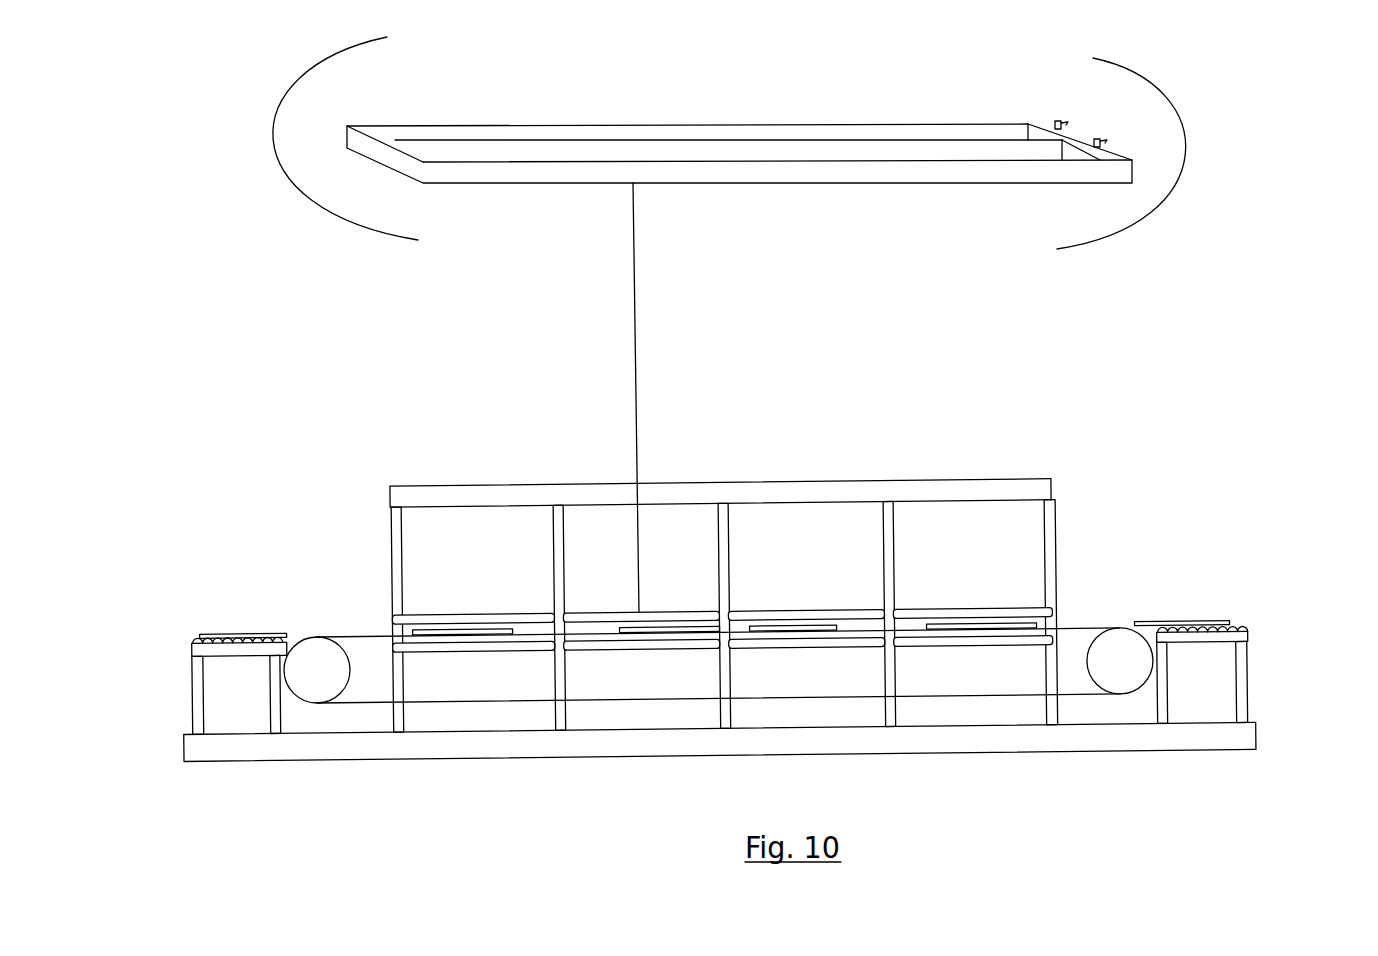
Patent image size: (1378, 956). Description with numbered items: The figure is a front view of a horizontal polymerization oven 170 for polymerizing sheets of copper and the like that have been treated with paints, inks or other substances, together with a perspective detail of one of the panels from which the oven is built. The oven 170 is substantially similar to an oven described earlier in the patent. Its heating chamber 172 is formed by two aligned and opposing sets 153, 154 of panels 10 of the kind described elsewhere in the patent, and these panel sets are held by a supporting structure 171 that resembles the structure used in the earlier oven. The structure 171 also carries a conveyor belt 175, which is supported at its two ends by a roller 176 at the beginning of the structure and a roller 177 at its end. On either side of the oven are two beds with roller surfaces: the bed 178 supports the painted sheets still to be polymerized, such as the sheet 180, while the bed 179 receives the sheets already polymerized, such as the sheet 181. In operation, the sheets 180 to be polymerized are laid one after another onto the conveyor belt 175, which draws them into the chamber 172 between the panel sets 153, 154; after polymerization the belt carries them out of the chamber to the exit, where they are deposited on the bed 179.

The panel 10 is at (857, 122).
The set of panels 153 is at (997, 614).
The set of panels 154 is at (915, 640).
The polymerization oven 170 is at (1075, 487).
The structure 171 is at (423, 497).
The chamber 172 is at (757, 633).
The conveyor belt 175 is at (518, 700).
The roller 176 is at (322, 687).
The roller 177 is at (1118, 678).
The bed 178 is at (202, 703).
The bed 179 is at (1247, 637).
The sheet 180 is at (263, 635).
The sheet 181 is at (1170, 620).